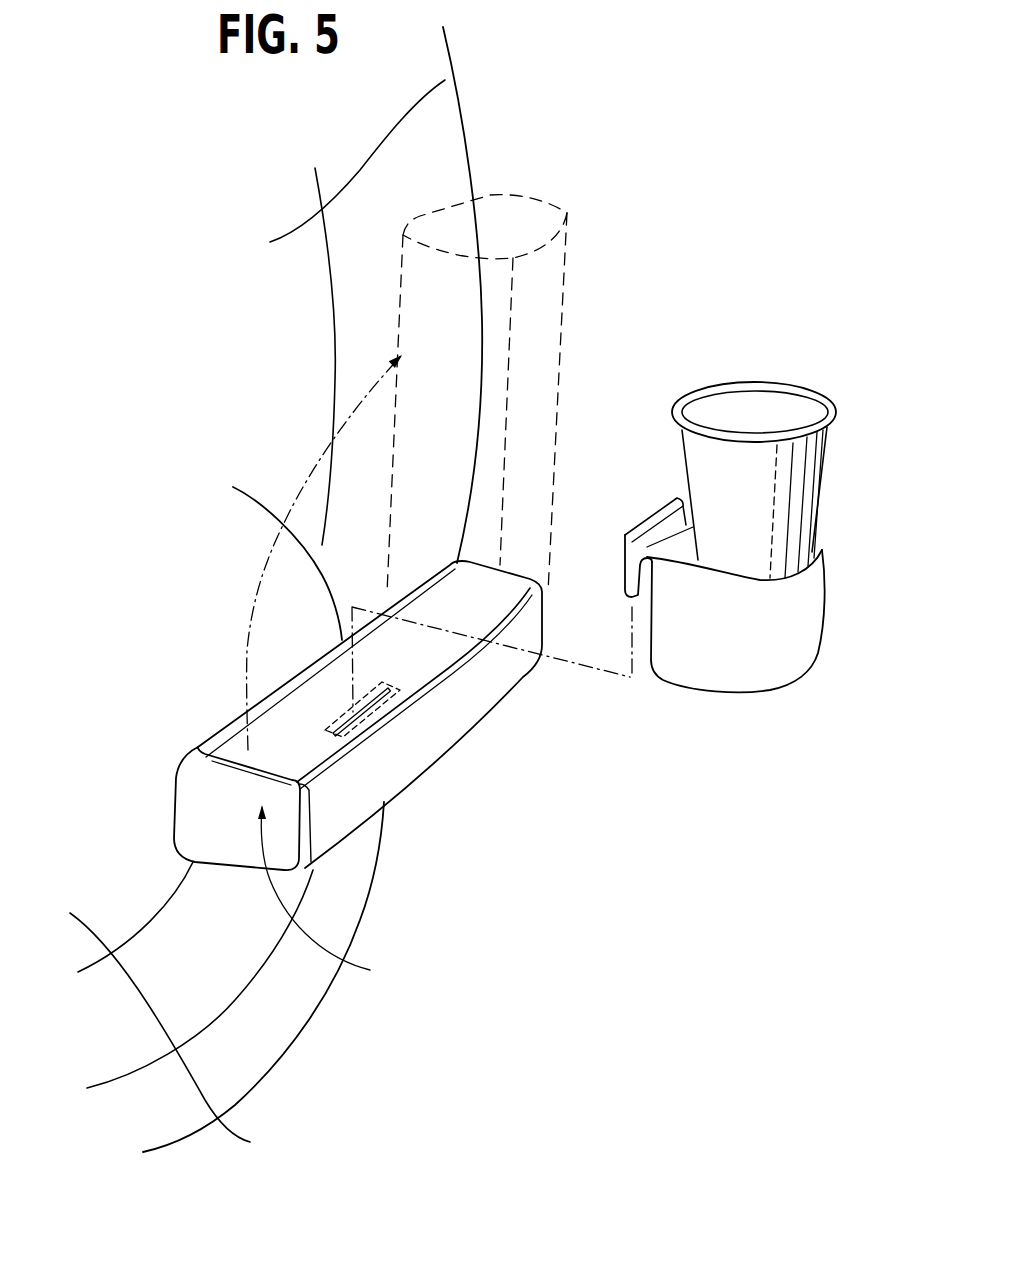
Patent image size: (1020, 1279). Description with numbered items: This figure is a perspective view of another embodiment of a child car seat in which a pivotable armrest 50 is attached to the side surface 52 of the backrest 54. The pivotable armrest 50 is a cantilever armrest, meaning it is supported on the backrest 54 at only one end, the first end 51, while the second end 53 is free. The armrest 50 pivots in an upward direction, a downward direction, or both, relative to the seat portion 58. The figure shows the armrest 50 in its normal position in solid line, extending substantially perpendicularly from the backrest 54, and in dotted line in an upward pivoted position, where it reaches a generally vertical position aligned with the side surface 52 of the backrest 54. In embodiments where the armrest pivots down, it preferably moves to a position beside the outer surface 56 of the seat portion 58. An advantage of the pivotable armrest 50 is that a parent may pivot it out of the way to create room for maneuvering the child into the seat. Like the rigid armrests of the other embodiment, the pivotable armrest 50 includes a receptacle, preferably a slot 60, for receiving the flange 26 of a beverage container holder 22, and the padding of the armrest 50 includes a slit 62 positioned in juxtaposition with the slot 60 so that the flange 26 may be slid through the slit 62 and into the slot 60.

The beverage container holder 22 is at (830, 587).
The flange 26 is at (630, 558).
The pivotable armrest 50 is at (410, 757).
The first end 51 is at (550, 603).
The side surface 52 is at (437, 162).
The second end 53 is at (333, 896).
The backrest 54 is at (445, 80).
The outer surface 56 is at (282, 1003).
The seat portion 58 is at (180, 1010).
The slot 60 is at (410, 690).
The slit 62 is at (395, 688).